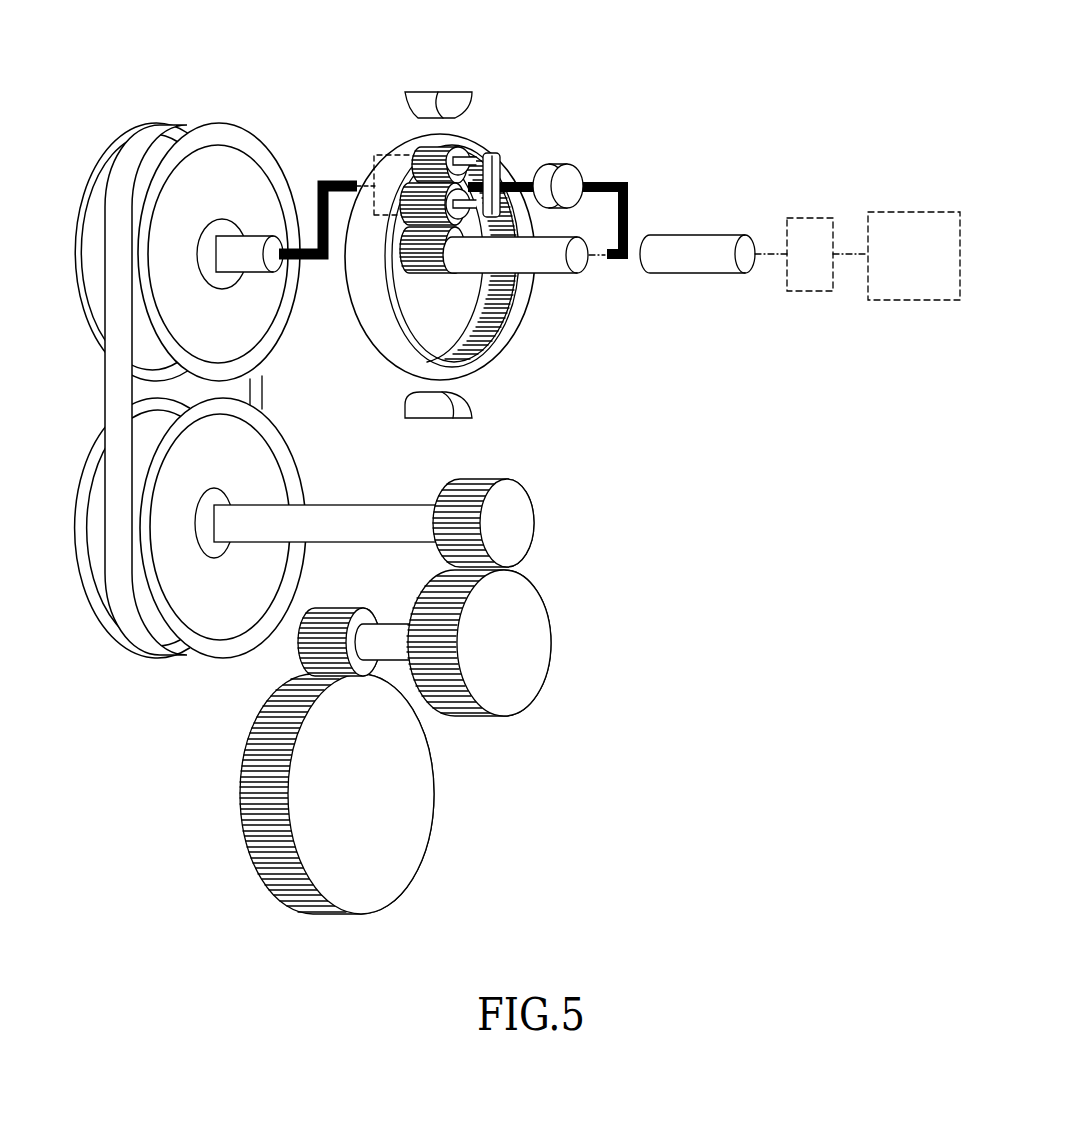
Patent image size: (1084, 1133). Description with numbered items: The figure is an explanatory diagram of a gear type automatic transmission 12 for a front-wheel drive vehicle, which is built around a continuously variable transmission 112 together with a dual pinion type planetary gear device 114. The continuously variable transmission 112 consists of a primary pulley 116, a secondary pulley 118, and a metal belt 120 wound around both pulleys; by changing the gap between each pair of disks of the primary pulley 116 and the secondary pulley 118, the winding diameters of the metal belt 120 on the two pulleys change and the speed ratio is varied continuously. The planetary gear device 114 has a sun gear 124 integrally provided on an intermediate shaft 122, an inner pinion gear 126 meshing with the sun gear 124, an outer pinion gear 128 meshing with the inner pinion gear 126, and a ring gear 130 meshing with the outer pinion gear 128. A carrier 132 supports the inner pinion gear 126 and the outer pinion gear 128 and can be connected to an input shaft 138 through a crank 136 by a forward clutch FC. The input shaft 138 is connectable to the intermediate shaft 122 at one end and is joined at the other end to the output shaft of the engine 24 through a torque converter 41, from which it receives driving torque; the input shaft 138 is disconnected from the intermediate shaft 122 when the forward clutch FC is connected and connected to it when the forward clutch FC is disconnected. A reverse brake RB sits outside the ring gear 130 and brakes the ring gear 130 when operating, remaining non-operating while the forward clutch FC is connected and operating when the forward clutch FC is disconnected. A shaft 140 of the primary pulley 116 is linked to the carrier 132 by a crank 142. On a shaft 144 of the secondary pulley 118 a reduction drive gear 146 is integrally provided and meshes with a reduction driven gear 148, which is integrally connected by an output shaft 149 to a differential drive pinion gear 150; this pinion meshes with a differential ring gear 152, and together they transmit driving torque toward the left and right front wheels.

The gear type automatic transmission 12 is at (584, 61).
The continuously variable transmission 112 is at (119, 132).
The primary pulley 116 is at (222, 122).
The secondary pulley 118 is at (155, 657).
The metal belt 120 is at (120, 381).
The intermediate shaft 122 is at (548, 270).
The sun gear 124 is at (414, 270).
The inner pinion gear 126 is at (405, 213).
The outer pinion gear 128 is at (413, 158).
The ring gear 130 is at (387, 347).
The carrier 132 is at (485, 152).
The crank 136 is at (614, 178).
The input shaft 138 is at (692, 240).
The shaft 140 is at (255, 240).
The crank 142 is at (338, 180).
The shaft 144 is at (366, 506).
The reduction drive gear 146 is at (532, 520).
The reduction driven gear 148 is at (550, 640).
The output shaft 149 is at (393, 625).
The differential drive pinion gear 150 is at (297, 655).
The differential ring gear 152 is at (435, 788).
The torque converter 41 is at (810, 218).
The engine 24 is at (915, 212).
The reverse brake RB is at (440, 92).
The forward clutch FC is at (560, 164).
The planetary gear device 114 is at (535, 354).